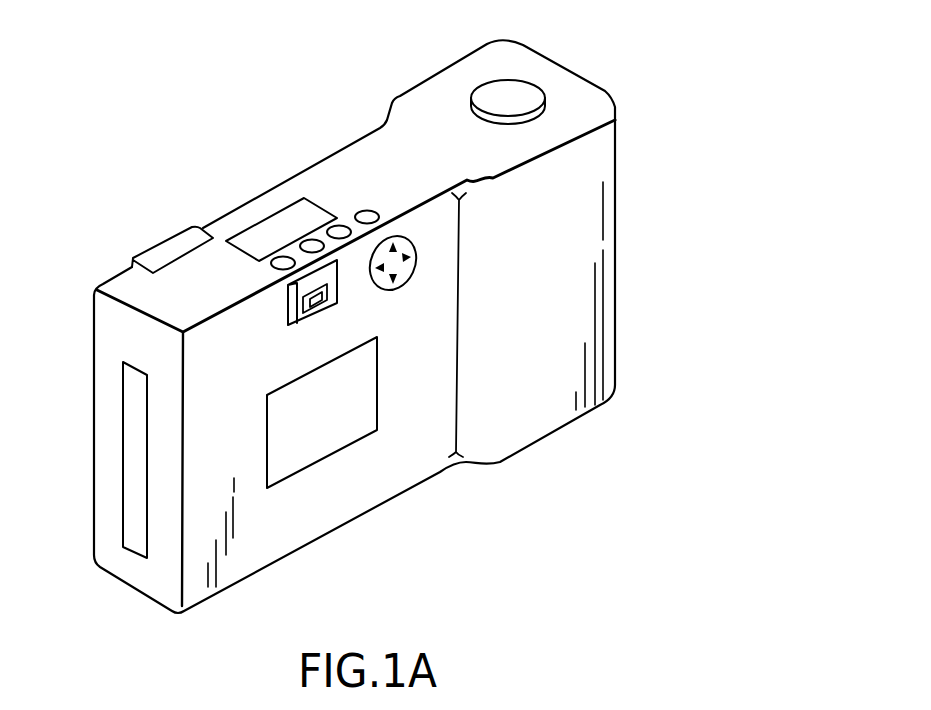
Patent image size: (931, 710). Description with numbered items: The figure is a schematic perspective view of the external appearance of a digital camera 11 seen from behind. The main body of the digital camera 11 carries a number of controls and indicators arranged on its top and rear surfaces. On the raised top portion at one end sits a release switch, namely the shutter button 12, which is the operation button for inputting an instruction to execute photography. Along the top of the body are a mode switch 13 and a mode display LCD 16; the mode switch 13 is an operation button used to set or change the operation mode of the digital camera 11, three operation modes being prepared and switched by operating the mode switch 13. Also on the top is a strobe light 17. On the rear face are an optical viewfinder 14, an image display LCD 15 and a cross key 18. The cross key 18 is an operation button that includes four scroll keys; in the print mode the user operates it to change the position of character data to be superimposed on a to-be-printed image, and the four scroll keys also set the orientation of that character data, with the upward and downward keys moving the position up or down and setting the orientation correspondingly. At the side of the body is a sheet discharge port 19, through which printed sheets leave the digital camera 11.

The digital camera 11 is at (538, 430).
The shutter button 12 is at (528, 88).
The mode switch 13 is at (275, 263).
The optical viewfinder 14 is at (317, 292).
The image display LCD 15 is at (325, 452).
The mode display LCD 16 is at (317, 207).
The strobe light 17 is at (172, 242).
The cross key 18 is at (410, 272).
The sheet discharge port 19 is at (125, 518).